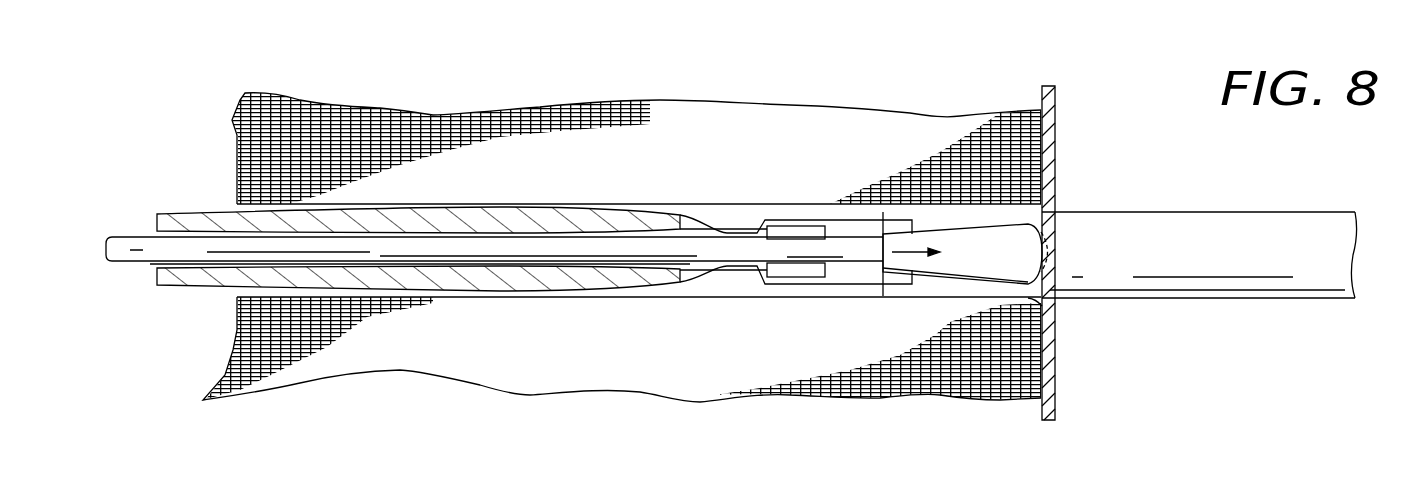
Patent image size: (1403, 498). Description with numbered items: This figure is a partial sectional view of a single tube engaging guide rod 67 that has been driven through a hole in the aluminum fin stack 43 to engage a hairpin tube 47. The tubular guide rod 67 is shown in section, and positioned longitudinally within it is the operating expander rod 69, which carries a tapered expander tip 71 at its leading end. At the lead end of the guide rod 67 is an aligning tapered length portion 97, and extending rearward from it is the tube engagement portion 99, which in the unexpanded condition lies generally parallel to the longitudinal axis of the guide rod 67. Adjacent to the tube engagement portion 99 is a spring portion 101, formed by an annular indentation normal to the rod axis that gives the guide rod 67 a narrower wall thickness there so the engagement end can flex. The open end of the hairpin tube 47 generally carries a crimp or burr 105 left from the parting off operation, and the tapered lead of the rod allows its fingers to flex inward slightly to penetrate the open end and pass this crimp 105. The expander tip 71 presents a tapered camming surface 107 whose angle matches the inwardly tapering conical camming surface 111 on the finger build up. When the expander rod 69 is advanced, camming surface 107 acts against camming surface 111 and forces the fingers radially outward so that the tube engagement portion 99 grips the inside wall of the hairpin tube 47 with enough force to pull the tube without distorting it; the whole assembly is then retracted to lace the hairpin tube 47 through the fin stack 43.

The aluminum fin stack 43 is at (392, 110).
The hairpin tube 47 is at (1275, 266).
The tubular guide rod 67 is at (195, 218).
The expander rod 69 is at (112, 236).
The tapered expander tip 71 is at (1012, 270).
The aligning tapered length portion 97 is at (886, 290).
The tube engagement portion 99 is at (828, 285).
The spring portion 101 is at (735, 282).
The crimp or burr 105 is at (1036, 305).
The tapered camming surface 107 is at (975, 218).
The camming surface 111 is at (895, 218).